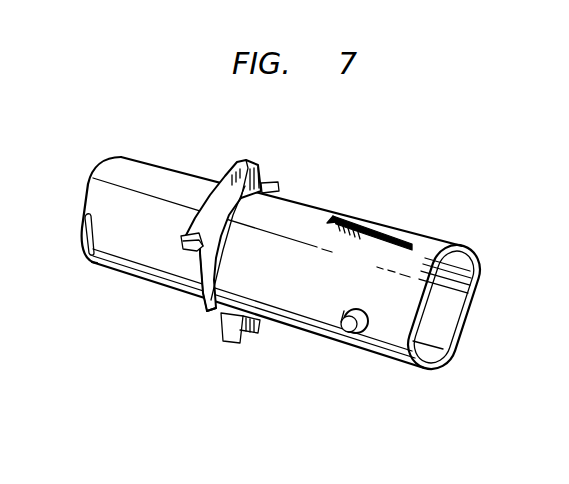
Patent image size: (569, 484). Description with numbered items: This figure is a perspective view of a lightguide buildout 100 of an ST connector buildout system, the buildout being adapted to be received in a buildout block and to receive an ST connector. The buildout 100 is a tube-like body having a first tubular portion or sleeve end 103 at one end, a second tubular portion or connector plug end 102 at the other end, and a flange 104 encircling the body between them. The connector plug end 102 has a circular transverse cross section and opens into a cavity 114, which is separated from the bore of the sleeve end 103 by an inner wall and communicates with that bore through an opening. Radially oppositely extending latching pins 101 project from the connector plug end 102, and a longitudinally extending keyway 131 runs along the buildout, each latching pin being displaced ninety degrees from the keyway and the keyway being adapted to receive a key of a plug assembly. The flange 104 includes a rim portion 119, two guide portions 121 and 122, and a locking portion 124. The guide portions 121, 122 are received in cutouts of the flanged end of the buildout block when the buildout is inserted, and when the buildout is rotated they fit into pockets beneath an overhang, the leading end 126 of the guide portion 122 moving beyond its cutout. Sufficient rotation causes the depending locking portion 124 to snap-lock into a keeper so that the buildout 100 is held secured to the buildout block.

The lightguide buildout 100 is at (312, 114).
The latching pins 101 is at (337, 333).
The second tubular portion or connector plug end 102 is at (410, 228).
The first tubular portion or sleeve end 103 is at (108, 167).
The flange 104 is at (203, 303).
The cavity 114 is at (450, 315).
The rim portion 119 is at (197, 268).
The guide portion 121 is at (257, 341).
The guide portion 122 is at (233, 176).
The locking portion 124 is at (180, 238).
The end of the guide portion 126 is at (267, 174).
The keyway 131 is at (383, 230).